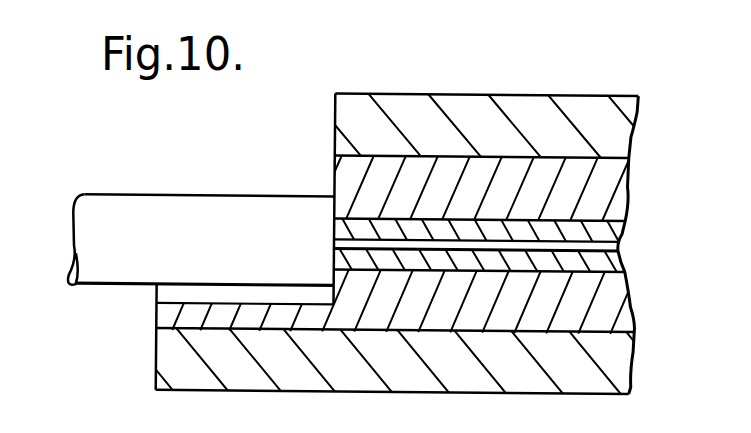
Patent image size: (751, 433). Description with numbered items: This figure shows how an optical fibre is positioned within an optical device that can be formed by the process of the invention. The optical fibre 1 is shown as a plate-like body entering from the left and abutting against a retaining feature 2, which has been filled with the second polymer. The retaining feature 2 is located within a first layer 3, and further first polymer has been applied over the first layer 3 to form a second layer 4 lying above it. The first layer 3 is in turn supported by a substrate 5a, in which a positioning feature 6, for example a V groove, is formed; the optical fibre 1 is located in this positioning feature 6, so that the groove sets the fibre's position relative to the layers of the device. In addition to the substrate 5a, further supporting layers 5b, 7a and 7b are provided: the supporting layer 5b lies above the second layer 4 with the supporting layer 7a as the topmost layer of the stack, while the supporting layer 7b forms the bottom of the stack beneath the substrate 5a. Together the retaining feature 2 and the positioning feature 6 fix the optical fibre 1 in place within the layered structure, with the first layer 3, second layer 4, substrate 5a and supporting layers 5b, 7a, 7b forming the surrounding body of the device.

The optical fibre 1 is at (190, 202).
The retaining feature 2 is at (617, 245).
The first layer 3 is at (607, 263).
The second layer 4 is at (624, 227).
The substrate 5a is at (602, 325).
The supporting layer 5b is at (612, 183).
The positioning feature 6 is at (192, 298).
The supporting layer 7a is at (608, 96).
The supporting layer 7b is at (250, 378).